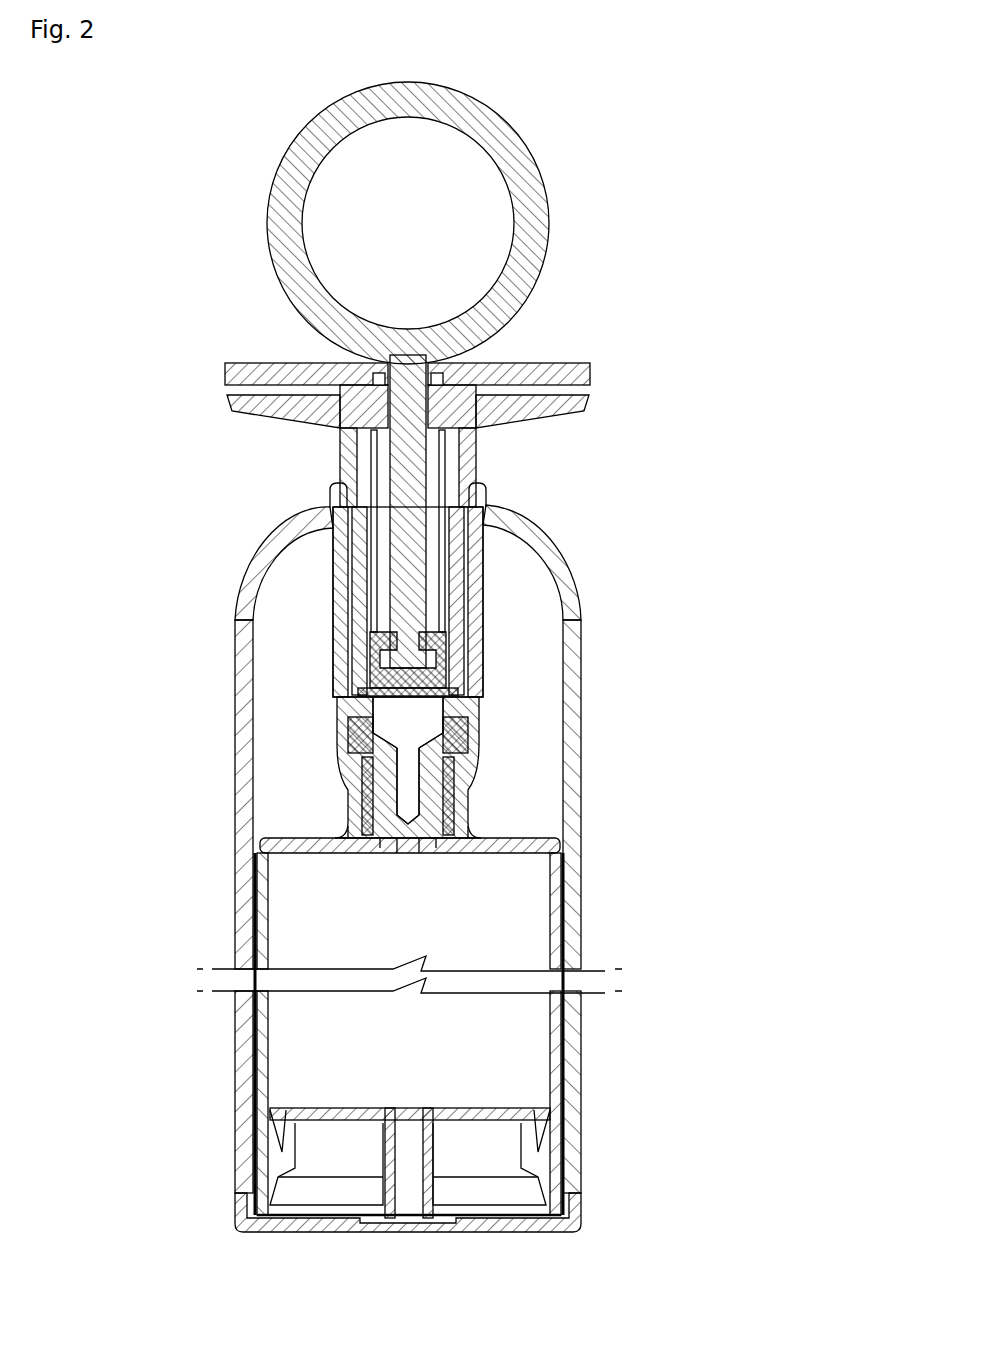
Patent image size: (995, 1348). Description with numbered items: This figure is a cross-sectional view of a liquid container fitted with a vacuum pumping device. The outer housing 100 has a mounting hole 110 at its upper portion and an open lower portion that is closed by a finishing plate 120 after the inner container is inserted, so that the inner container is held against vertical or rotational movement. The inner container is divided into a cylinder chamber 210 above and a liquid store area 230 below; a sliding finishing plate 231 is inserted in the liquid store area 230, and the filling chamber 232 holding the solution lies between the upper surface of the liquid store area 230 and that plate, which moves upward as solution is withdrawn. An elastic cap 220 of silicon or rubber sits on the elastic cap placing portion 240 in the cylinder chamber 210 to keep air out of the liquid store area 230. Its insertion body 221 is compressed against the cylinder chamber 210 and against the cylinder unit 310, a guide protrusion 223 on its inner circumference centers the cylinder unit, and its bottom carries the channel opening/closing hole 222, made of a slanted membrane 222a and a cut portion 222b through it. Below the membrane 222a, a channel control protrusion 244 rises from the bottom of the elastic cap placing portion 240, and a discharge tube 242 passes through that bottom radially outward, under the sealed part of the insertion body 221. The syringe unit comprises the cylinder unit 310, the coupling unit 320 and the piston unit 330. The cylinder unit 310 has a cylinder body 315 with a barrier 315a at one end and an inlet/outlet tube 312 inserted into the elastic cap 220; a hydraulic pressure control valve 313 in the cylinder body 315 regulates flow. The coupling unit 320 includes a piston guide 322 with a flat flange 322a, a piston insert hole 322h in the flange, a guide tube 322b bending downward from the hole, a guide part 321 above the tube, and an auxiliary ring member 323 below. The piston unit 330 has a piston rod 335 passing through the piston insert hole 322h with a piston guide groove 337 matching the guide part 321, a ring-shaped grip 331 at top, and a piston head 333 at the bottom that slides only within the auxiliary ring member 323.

The housing 100 is at (228, 1092).
The mounting hole 110 is at (330, 503).
The finishing plate 120 is at (253, 1227).
The cylinder chamber 210 is at (477, 798).
The elastic cap 220 is at (576, 740).
The insertion body 221 is at (462, 718).
The channel opening/closing hole 222 is at (552, 774).
The membrane 222a is at (467, 775).
The cut portion 222b is at (463, 773).
The guide protrusion 223 is at (470, 697).
The liquid store area 230 is at (467, 1035).
The sliding finishing plate 231 is at (525, 1150).
The filling chamber 232 is at (495, 1108).
The elastic cap placing portion 240 is at (470, 832).
The discharge tube 242 is at (436, 855).
The channel control protrusion 244 is at (438, 848).
The cylinder unit 310 is at (275, 665).
The inlet/outlet tube 312 is at (400, 783).
The hydraulic pressure control valve 313 is at (380, 698).
The cylinder body 315 is at (352, 563).
The barrier 315a is at (350, 705).
The coupling unit 320 is at (304, 389).
The guide part 321 is at (400, 350).
The piston guide 322 is at (337, 383).
The flange 322a is at (243, 364).
The piston insert hole 322h is at (250, 395).
The guide tube 322b is at (250, 423).
The auxiliary ring member 323 is at (340, 547).
The piston unit 330 is at (544, 492).
The grip 331 is at (515, 290).
The piston head 333 is at (440, 600).
The piston rod 335 is at (450, 462).
The piston guide groove 337 is at (450, 488).